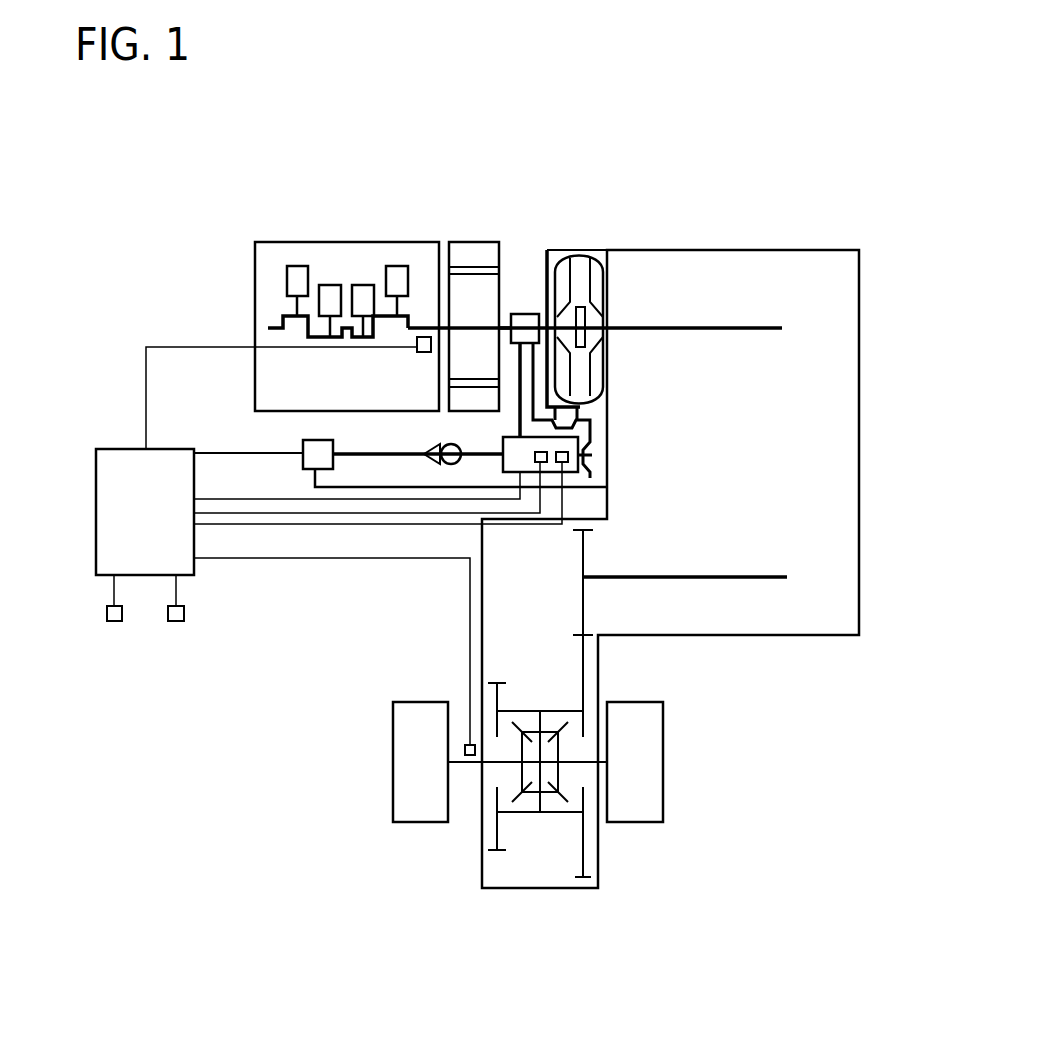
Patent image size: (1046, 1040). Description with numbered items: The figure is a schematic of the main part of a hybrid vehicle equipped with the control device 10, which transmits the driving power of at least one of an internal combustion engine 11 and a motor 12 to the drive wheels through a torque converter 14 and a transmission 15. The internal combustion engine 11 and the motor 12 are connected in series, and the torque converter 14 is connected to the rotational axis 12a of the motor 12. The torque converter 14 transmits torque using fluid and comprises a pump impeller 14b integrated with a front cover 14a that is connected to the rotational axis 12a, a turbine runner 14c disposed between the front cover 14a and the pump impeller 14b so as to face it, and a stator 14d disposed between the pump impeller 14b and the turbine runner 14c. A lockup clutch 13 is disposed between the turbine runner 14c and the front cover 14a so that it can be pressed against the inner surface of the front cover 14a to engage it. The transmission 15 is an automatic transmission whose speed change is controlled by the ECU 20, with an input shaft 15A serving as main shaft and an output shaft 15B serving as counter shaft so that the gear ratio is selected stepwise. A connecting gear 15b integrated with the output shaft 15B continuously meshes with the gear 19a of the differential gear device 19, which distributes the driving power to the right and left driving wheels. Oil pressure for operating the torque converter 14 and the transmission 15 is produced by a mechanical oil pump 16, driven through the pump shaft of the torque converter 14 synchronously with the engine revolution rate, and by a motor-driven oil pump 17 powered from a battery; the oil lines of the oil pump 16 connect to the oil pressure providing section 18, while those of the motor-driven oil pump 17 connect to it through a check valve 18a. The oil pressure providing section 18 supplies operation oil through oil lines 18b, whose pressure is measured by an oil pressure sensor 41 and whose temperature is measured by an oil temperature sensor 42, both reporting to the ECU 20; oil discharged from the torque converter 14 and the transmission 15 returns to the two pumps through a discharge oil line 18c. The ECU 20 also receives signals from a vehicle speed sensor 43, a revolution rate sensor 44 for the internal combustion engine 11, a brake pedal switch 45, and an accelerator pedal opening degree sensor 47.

The control device 10 is at (772, 150).
The internal combustion engine 11 is at (285, 242).
The motor 12 is at (473, 242).
The rotational axis 12a is at (504, 300).
The lockup clutch 13 is at (552, 250).
The torque converter 14 is at (617, 294).
The front cover 14a is at (545, 250).
The pump impeller 14b is at (598, 268).
The turbine runner 14c is at (587, 250).
The stator 14d is at (590, 312).
The transmission 15 is at (845, 250).
The input shaft 15A is at (733, 327).
The output shaft 15B is at (633, 580).
The connecting gear 15b is at (582, 620).
The mechanical oil pump 16 is at (527, 313).
The motor-driven oil pump 17 is at (303, 465).
The oil pressure providing section 18 is at (581, 508).
The check valve 18a is at (432, 448).
The oil lines 18b is at (593, 432).
The discharge oil line 18c is at (432, 488).
The differential gear device 19 is at (523, 813).
The gear 19a is at (582, 692).
The ECU 20 is at (122, 448).
The oil pressure sensor 41 is at (533, 466).
The oil temperature sensor 42 is at (570, 466).
The vehicle speed sensor 43 is at (465, 745).
The revolution rate sensor 44 is at (418, 352).
The brake pedal switch 45 is at (114, 621).
The accelerator pedal opening degree sensor 47 is at (176, 621).